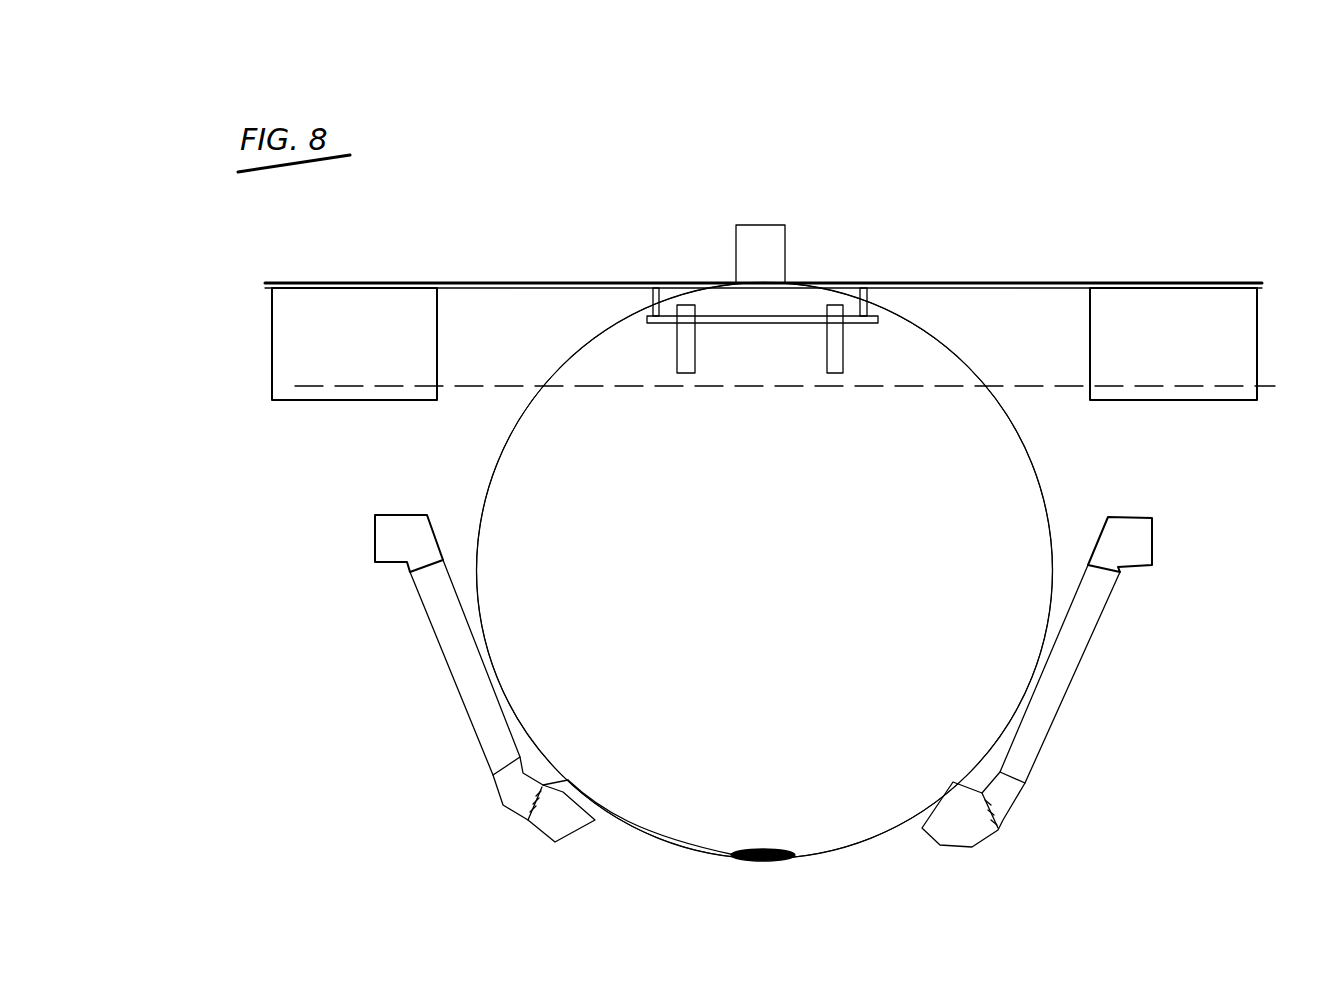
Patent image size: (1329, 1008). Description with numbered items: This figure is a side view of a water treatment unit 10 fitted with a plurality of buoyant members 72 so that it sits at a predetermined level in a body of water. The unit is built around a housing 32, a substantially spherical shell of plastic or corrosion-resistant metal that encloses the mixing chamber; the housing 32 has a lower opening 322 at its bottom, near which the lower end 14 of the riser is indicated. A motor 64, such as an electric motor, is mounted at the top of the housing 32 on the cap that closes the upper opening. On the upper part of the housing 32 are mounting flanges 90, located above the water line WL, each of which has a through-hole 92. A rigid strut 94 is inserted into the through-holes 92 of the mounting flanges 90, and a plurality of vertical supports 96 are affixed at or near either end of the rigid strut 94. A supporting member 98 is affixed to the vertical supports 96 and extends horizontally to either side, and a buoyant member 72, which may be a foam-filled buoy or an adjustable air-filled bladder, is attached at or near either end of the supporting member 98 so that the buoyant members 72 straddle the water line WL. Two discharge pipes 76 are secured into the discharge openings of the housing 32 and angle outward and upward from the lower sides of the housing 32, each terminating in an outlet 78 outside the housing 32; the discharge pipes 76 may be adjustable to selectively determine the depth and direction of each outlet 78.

The water treatment unit 10 is at (1020, 208).
The supporting member 98 is at (600, 282).
The motor 64 is at (762, 265).
The vertical supports 96 is at (648, 303).
The rigid strut 94 is at (783, 325).
The through-hole 92 is at (677, 325).
The mounting flanges 90 is at (688, 365).
The buoyant member 72 is at (315, 372).
The water line WL is at (507, 387).
The housing 32 is at (1040, 495).
The outlet 78 is at (383, 540).
The discharge pipe 76 is at (483, 727).
The lower opening 322 is at (795, 858).
The lower end 14 is at (763, 863).